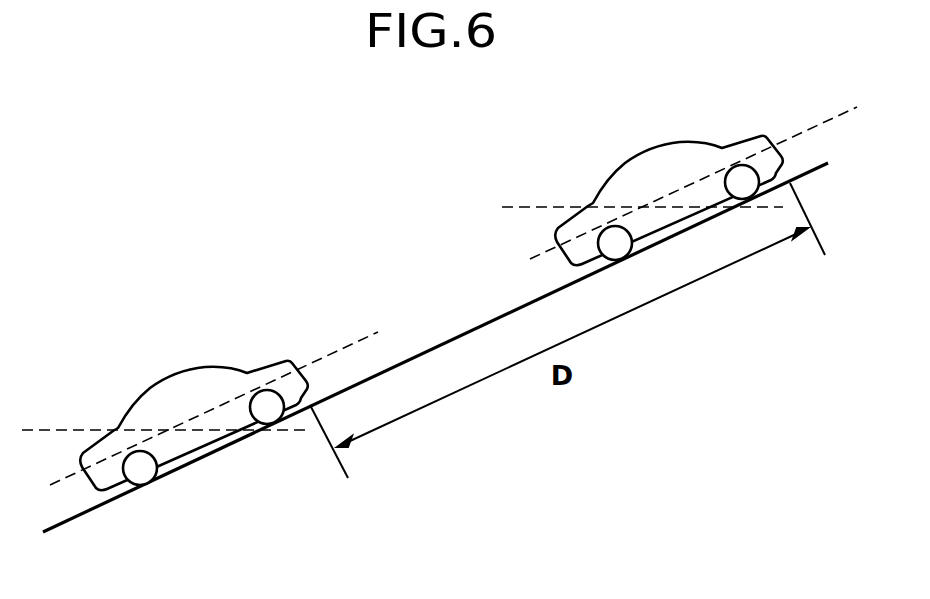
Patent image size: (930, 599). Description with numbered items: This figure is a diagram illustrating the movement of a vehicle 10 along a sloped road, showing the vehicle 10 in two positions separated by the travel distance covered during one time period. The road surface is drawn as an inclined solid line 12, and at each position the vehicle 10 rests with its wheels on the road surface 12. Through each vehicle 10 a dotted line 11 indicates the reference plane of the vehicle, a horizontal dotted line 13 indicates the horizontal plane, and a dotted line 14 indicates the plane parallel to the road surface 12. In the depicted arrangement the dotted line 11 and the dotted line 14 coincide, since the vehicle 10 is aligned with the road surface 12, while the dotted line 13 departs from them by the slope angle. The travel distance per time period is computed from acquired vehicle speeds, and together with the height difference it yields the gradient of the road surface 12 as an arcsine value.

The vehicle 10 is at (158, 382).
The dotted line 11 is at (453, 283).
The solid line 12 is at (223, 451).
The dotted line 13 is at (43, 428).
The dotted line 14 is at (310, 360).